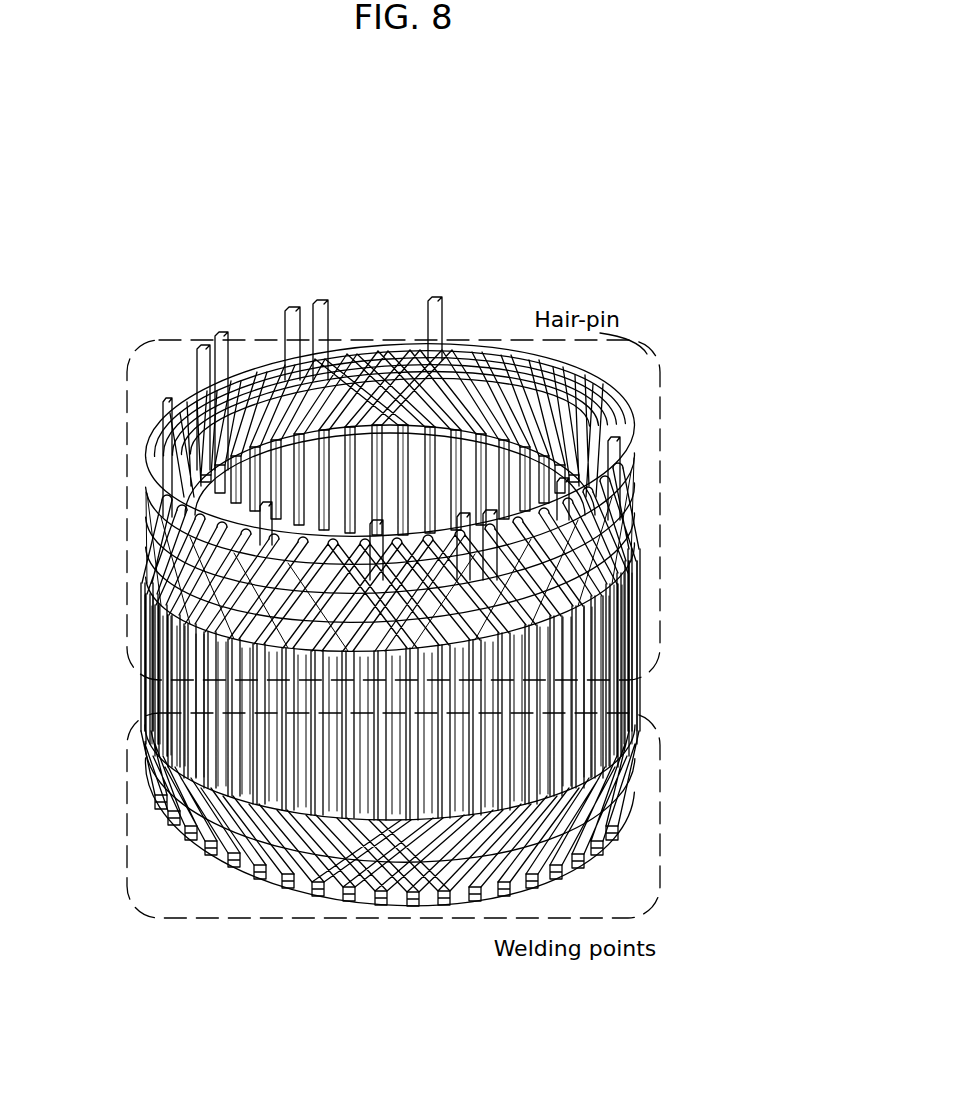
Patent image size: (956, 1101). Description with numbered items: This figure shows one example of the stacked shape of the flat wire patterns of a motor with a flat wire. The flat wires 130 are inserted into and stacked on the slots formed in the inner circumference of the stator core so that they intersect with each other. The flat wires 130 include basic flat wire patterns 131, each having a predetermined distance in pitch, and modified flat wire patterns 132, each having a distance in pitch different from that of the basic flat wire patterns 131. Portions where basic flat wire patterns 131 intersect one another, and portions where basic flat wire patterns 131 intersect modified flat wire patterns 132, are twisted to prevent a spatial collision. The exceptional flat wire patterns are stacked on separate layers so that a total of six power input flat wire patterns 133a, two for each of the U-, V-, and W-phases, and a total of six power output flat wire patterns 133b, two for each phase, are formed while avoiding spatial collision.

The flat wires 130 is at (156, 203).
The basic flat wire patterns 131 is at (383, 343).
The modified flat wire patterns 132 is at (567, 363).
The power input flat wire patterns 133a is at (706, 572).
The power output flat wire patterns 133b is at (706, 623).